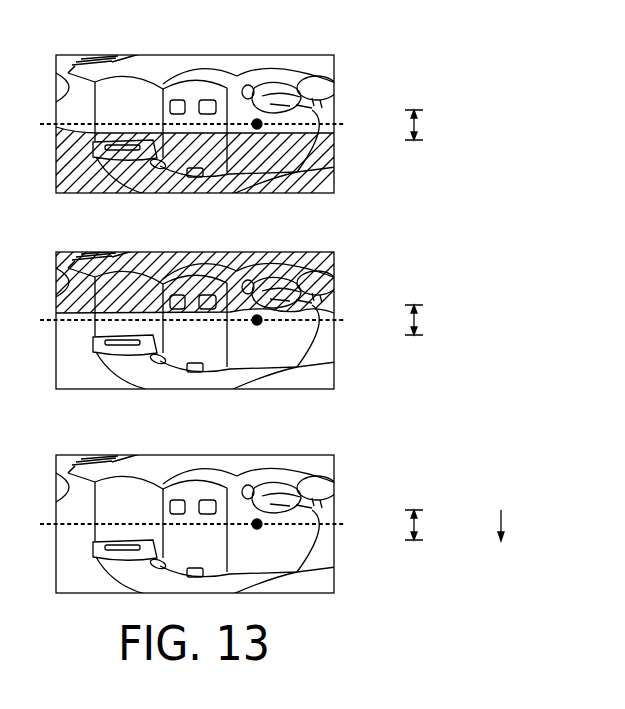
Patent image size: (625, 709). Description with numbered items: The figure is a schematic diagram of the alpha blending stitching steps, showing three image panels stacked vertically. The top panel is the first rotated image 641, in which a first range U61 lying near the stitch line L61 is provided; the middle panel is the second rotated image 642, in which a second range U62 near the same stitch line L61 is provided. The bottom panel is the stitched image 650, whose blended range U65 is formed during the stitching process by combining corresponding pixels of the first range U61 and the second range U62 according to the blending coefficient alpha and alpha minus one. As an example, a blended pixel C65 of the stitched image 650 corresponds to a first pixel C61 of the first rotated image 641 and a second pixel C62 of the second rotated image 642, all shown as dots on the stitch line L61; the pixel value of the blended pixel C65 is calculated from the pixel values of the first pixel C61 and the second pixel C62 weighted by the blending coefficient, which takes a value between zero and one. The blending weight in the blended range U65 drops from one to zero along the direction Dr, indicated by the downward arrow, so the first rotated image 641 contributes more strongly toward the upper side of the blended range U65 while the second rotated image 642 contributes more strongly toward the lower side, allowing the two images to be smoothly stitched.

The first rotated image 641 is at (232, 195).
The second rotated image 642 is at (232, 320).
The stitched image 650 is at (223, 512).
The stitch line L61 is at (212, 324).
The first range U61 is at (433, 125).
The second range U62 is at (433, 320).
The blended range U65 is at (433, 525).
The first pixel C61 is at (258, 129).
The second pixel C62 is at (261, 316).
The blended pixel C65 is at (258, 529).
The direction Dr is at (514, 525).